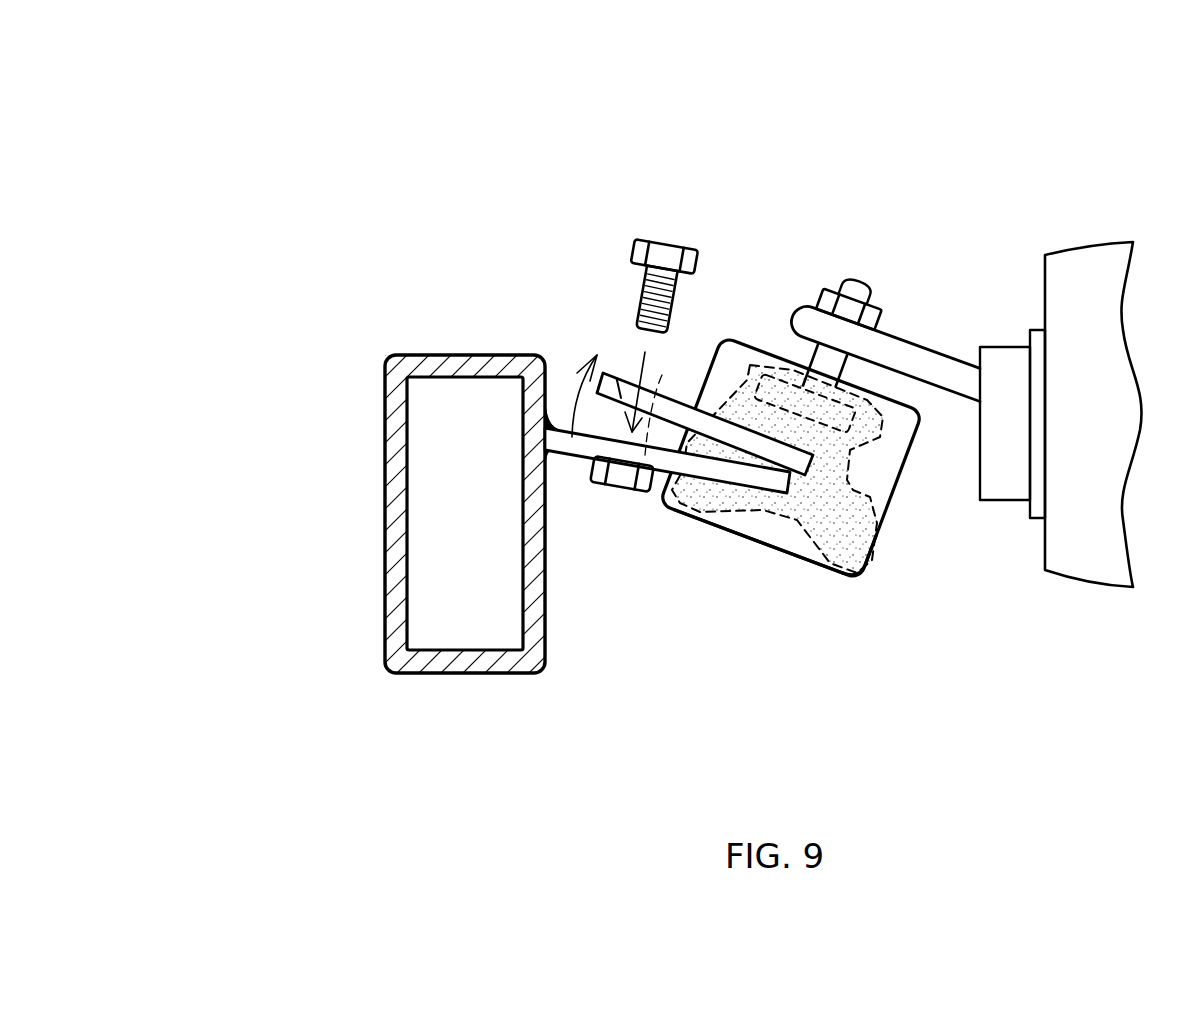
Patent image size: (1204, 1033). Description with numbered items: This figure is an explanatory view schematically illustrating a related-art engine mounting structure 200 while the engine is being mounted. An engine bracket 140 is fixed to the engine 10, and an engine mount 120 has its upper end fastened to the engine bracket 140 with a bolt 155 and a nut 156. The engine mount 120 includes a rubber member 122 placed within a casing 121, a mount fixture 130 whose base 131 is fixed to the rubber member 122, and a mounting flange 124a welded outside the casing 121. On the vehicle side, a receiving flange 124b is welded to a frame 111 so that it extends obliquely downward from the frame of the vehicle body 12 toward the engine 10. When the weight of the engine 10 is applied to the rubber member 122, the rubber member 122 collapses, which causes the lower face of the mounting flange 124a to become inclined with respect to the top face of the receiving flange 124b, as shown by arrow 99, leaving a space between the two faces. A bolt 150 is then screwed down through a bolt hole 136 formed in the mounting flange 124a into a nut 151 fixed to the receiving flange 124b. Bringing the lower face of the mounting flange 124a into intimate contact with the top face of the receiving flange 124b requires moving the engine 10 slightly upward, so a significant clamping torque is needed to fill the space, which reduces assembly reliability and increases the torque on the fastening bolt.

The engine mounting structure 200 is at (380, 140).
The engine 10 is at (1108, 242).
The vehicle body 12 is at (353, 495).
The frame 111 is at (385, 555).
The arrow 99 is at (578, 400).
The mounting flange 124a is at (616, 372).
The receiving flange 124b is at (571, 452).
The bolt hole 136 is at (662, 375).
The bolt 150 is at (647, 237).
The nut 151 is at (638, 488).
The engine mount 120 is at (893, 500).
The casing 121 is at (773, 556).
The rubber member 122 is at (868, 578).
The mount fixture 130 is at (810, 352).
The base 131 is at (858, 430).
The engine bracket 140 is at (942, 352).
The bolt 155 is at (863, 286).
The nut 156 is at (884, 312).